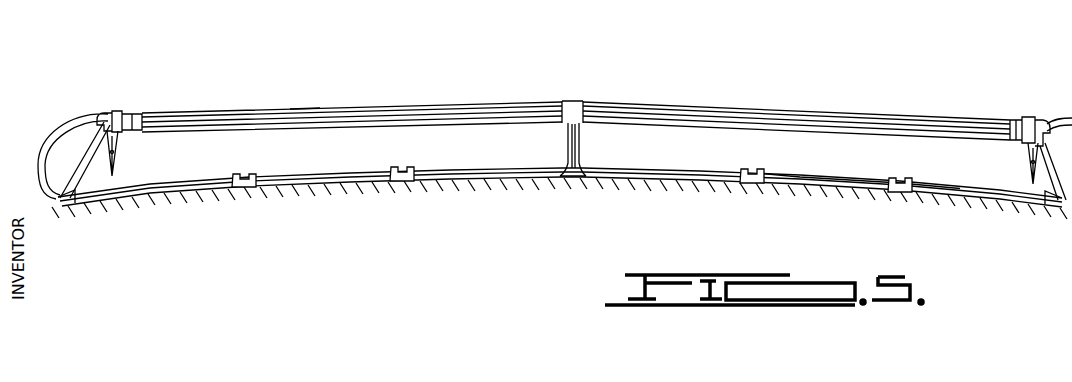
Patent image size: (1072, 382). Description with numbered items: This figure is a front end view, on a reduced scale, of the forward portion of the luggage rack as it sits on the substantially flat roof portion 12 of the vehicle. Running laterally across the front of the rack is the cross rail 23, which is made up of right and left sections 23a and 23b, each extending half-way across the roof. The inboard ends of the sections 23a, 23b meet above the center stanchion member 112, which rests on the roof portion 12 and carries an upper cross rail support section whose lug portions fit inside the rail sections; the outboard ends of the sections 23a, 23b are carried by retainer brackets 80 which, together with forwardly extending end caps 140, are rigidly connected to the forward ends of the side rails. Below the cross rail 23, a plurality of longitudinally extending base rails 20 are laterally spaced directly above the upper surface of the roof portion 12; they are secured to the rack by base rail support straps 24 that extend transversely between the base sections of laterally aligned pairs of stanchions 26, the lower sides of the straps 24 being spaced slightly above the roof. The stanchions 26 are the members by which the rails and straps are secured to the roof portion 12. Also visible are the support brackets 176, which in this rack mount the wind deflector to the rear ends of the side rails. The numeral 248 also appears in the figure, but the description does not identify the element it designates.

The roof portion 12 is at (328, 180).
The base rail 20 is at (252, 162).
The cross rail 23 is at (576, 91).
The right cross rail section 23a is at (183, 118).
The left cross rail section 23b is at (822, 112).
The base rail support strap 24 is at (843, 160).
The stanchion 26 is at (97, 166).
The retainer bracket 80 is at (131, 107).
The center stanchion member 112 is at (590, 151).
The end cap 140 is at (110, 104).
The support bracket 176 is at (128, 170).
The sleeve 248 is at (326, 128).